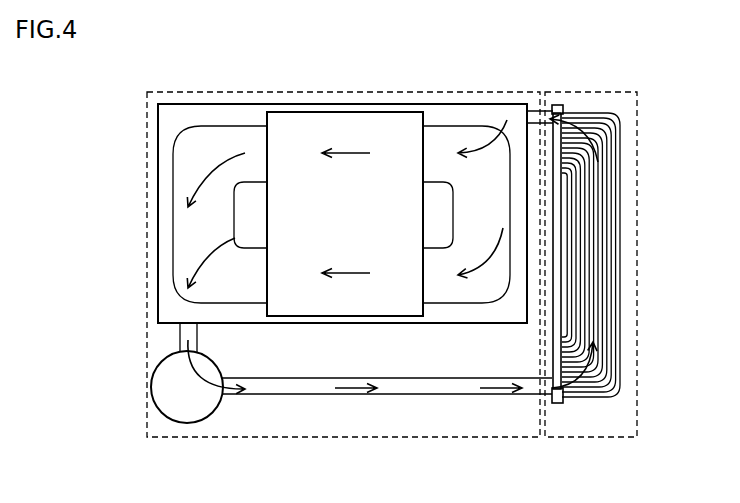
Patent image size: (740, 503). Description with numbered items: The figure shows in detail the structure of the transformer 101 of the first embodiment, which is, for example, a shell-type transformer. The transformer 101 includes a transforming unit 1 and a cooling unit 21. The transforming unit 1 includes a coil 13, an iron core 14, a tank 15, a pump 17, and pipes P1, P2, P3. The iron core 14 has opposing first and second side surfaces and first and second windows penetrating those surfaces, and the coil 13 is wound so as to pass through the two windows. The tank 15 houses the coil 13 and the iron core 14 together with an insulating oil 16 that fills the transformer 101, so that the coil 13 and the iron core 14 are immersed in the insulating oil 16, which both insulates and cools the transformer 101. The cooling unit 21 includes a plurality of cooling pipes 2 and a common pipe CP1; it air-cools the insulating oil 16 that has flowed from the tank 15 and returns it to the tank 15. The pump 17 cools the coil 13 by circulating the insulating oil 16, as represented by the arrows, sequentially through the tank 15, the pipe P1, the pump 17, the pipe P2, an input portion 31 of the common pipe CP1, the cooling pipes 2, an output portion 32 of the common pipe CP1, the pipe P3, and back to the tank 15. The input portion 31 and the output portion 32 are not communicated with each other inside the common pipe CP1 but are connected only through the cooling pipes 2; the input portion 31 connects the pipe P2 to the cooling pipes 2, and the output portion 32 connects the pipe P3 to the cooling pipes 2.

The transformer 101 is at (687, 62).
The transforming unit 1 is at (178, 92).
The cooling unit 21 is at (621, 92).
The tank 15 is at (239, 104).
The coil 13 is at (450, 126).
The iron core 14 is at (302, 112).
The insulating oil 16 is at (205, 248).
The pipe P1 is at (180, 332).
The pump 17 is at (163, 410).
The pipe P2 is at (408, 395).
The output portion 32 is at (557, 143).
The input portion 31 is at (555, 366).
The pipe P3 is at (548, 108).
The common pipe CP1 is at (566, 403).
The cooling pipes 2 is at (570, 250).